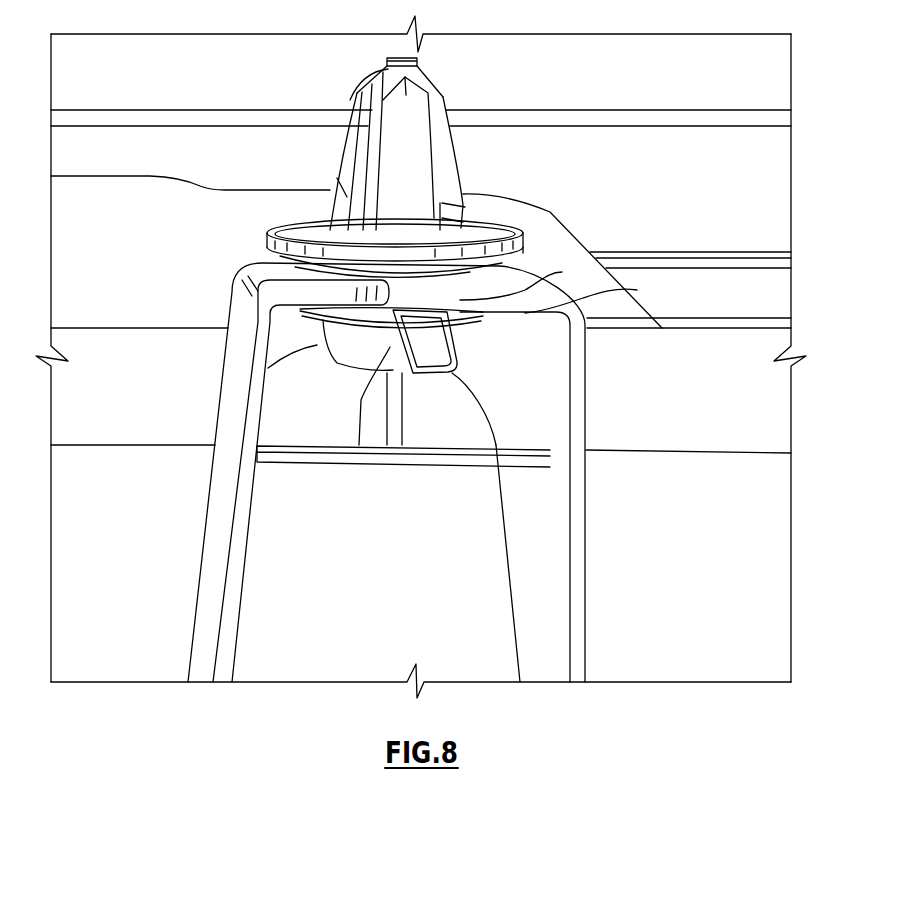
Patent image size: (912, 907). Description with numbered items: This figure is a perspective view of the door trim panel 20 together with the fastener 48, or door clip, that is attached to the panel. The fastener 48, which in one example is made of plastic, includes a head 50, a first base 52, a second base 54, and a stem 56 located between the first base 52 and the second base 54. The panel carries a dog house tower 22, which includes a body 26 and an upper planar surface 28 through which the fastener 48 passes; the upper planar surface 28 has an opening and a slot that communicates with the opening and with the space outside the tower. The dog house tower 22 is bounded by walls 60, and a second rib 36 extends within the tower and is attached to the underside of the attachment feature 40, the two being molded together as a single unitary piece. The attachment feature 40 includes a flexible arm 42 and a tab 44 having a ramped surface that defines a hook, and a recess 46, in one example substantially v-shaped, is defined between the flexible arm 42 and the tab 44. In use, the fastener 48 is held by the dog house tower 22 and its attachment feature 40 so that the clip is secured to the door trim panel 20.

The door trim panel 20 is at (773, 412).
The dog house tower 22 is at (210, 575).
The body 26 is at (578, 585).
The upper planar surface 28 is at (505, 277).
The second rib 36 is at (374, 416).
The attachment feature 40 is at (343, 334).
The flexible arm 42 is at (364, 400).
The tab 44 is at (445, 352).
The recess 46 is at (390, 332).
The fastener 48 is at (386, 147).
The head 50 is at (405, 123).
The first base 52 is at (518, 240).
The second base 54 is at (562, 261).
The stem 56 is at (523, 279).
The walls 60 is at (577, 462).